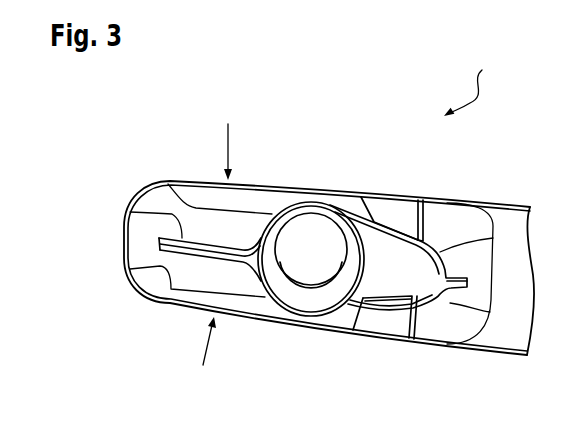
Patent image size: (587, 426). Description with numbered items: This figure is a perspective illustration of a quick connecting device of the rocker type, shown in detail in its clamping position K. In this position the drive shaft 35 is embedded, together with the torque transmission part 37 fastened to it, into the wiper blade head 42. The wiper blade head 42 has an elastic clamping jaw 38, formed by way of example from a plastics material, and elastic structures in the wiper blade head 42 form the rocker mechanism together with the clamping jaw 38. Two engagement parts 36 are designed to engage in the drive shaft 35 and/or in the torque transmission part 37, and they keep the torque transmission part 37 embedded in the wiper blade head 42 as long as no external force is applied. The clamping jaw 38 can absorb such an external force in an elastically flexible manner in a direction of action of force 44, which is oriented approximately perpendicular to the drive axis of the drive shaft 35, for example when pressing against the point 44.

The drive shaft 35 is at (306, 233).
The engagement part 36 is at (395, 212).
The torque transmission part 37 is at (423, 262).
The clamping jaw 38 is at (243, 181).
The wiper blade head 42 is at (114, 199).
The direction of action of force 44 is at (226, 149).
The clamping position K is at (469, 82).